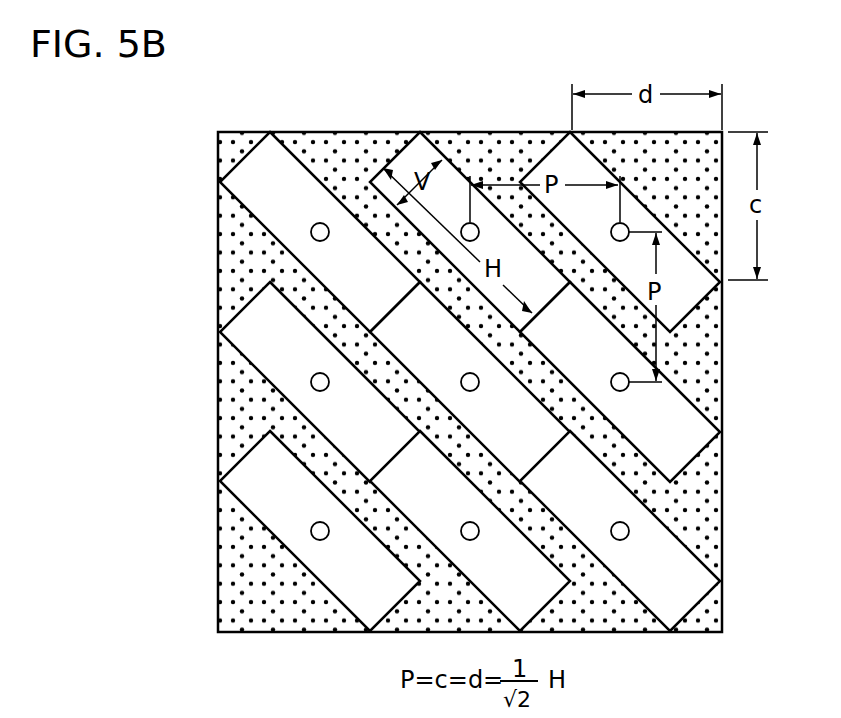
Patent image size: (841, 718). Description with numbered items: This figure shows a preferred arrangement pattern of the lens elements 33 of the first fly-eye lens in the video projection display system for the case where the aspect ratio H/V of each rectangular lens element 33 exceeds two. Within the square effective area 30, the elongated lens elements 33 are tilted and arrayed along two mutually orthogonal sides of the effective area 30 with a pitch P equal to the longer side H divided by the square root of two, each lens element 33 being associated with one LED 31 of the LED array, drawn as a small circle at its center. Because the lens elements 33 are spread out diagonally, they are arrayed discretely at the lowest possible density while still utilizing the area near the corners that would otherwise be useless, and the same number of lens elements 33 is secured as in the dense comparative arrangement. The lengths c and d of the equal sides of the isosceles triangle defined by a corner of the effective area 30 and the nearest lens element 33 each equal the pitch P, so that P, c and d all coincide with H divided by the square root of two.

The effective area 30 is at (497, 132).
The LED 31 is at (311, 233).
The lens element 33 is at (270, 199).